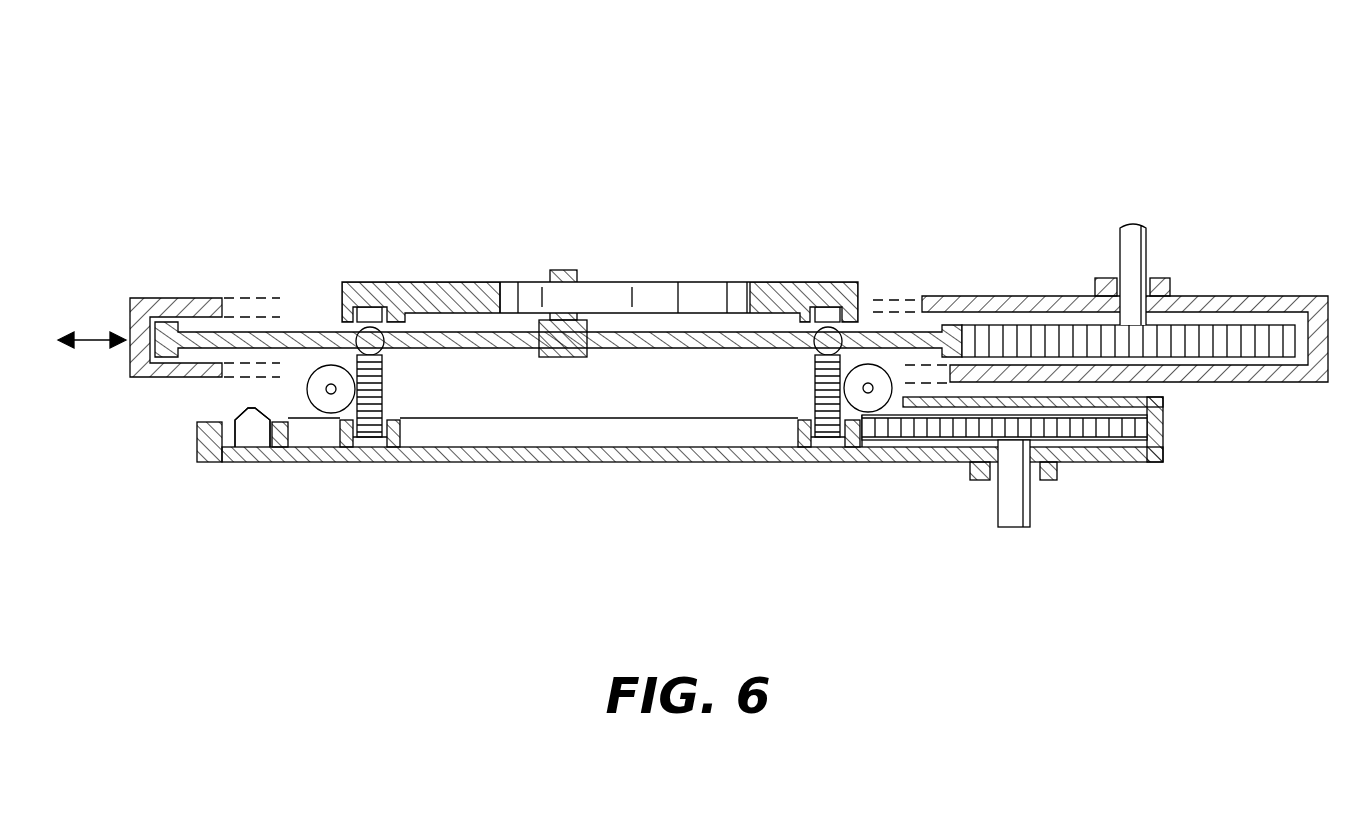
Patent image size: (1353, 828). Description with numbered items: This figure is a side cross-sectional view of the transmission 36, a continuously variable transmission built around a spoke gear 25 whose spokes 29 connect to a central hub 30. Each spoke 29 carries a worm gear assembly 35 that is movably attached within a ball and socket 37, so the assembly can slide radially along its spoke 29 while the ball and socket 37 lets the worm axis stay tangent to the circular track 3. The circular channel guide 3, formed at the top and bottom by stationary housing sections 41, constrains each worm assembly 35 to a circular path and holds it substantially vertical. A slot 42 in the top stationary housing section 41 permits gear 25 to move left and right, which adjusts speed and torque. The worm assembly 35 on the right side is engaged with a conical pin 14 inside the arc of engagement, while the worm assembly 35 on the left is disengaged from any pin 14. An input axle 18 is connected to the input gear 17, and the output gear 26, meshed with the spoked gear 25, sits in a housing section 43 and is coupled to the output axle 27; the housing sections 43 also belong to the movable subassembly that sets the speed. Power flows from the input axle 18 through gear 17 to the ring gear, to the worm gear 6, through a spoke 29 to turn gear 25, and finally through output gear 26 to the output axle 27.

The transmission 36 is at (934, 132).
The housing section 43 is at (166, 298).
The spoke gear 25 is at (243, 333).
The spoke 29 is at (300, 330).
The circular track 3 is at (370, 312).
The slot 42 is at (632, 298).
The stationary housing section 41 is at (197, 437).
The output axle 27 is at (1118, 243).
The output gear 26 is at (1243, 338).
The worm gear 6 is at (326, 400).
The ball and socket 37 is at (384, 352).
The worm gear assembly 35 is at (395, 396).
The hub 30 is at (573, 358).
The conical pin 14 is at (252, 447).
The input gear 17 is at (1165, 432).
The input axle 18 is at (1016, 505).